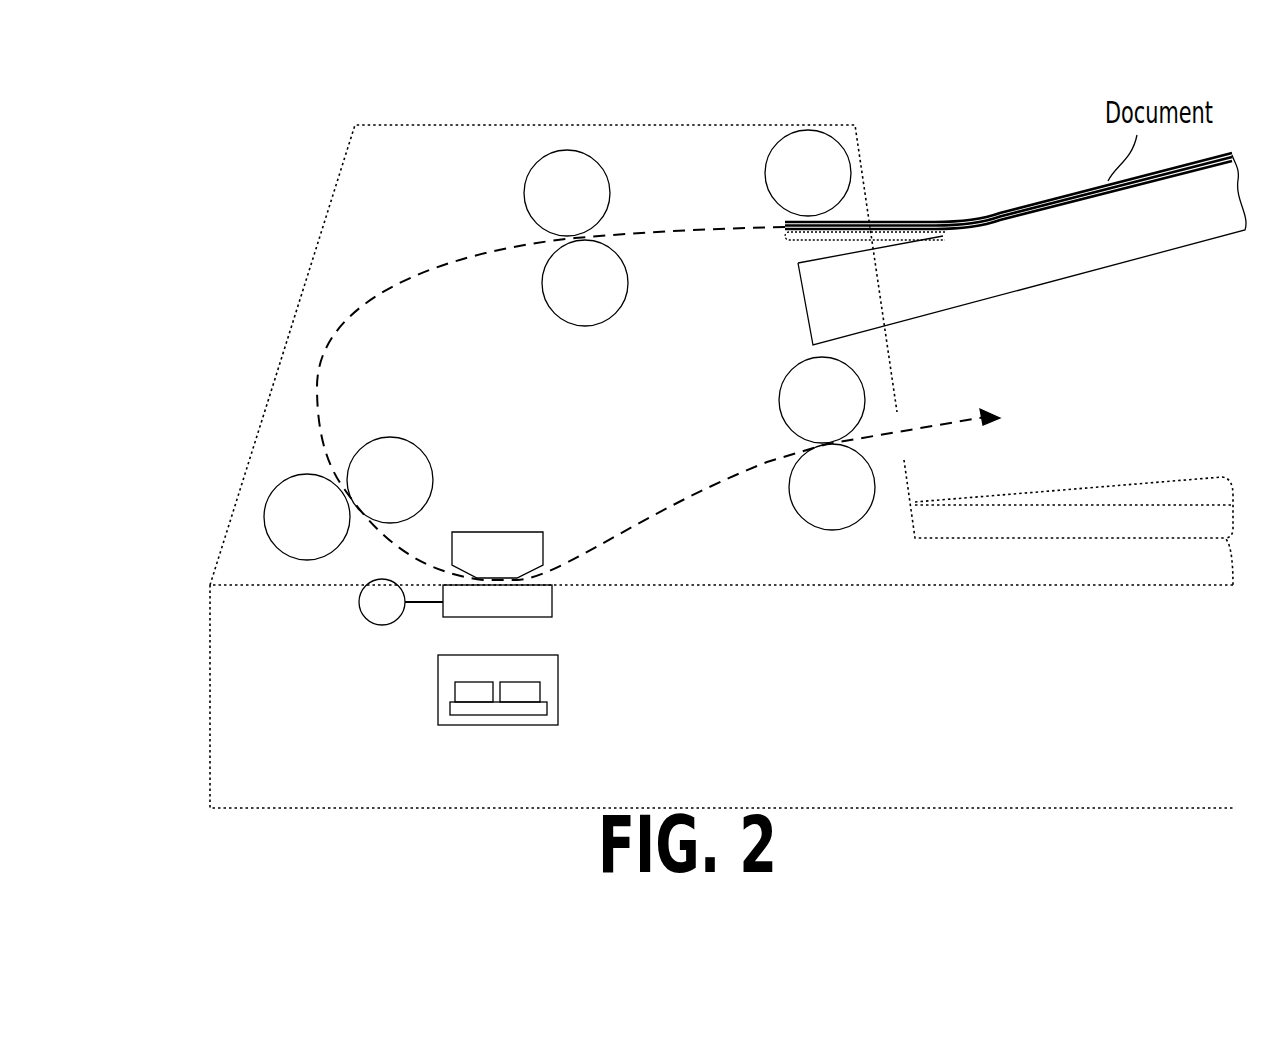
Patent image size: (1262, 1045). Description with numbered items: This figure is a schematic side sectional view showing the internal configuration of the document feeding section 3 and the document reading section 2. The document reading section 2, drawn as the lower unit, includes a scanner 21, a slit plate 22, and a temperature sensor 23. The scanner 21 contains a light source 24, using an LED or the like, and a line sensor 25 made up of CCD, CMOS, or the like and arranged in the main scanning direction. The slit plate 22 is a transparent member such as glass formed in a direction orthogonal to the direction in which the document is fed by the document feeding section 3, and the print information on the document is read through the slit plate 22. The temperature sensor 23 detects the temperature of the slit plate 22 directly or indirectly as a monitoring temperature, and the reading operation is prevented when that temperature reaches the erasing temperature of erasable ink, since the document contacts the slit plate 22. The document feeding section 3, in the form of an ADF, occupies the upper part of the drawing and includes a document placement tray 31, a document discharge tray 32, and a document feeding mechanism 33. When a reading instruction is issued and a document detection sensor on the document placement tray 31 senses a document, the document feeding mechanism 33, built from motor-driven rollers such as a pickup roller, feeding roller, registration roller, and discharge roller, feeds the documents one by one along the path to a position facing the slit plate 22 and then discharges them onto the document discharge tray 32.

The document reading section 2 is at (193, 648).
The document feeding section 3 is at (259, 248).
The scanner 21 is at (516, 722).
The slit plate 22 is at (552, 608).
The temperature sensor 23 is at (358, 613).
The light source 24 is at (460, 690).
The line sensor 25 is at (532, 688).
The document placement tray 31 is at (1173, 213).
The document discharge tray 32 is at (1082, 490).
The document feeding mechanism 33 is at (340, 176).